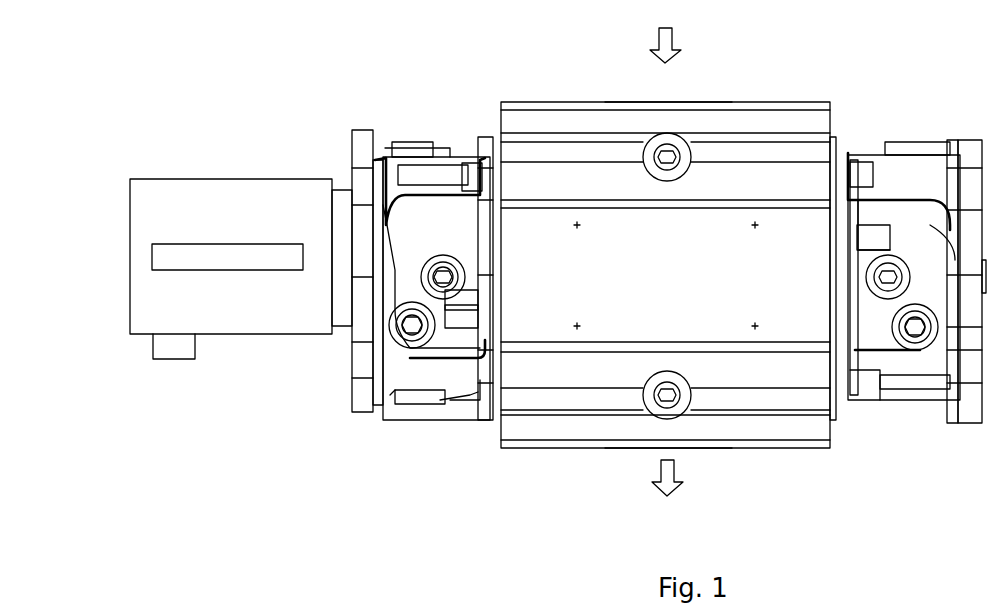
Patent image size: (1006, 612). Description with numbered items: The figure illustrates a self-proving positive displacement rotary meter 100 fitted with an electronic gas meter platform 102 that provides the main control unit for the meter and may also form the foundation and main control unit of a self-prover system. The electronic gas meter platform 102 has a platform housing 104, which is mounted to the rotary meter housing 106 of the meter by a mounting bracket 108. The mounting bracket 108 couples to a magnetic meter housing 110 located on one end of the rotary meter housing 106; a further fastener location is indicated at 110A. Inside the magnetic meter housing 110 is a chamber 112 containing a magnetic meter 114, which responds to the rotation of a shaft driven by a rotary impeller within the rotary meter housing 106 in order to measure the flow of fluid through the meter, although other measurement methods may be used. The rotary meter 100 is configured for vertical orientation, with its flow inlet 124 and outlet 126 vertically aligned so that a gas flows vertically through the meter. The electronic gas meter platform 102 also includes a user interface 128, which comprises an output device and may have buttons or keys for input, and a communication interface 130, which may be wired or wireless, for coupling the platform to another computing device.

The rotary meter 100 is at (308, 50).
The electronic gas meter platform 102 is at (200, 160).
The platform housing 104 is at (301, 311).
The rotary meter housing 106 is at (683, 279).
The mounting bracket 108 is at (346, 330).
The magnetic meter housing 110 is at (438, 246).
The fastener 110A is at (395, 393).
The chamber 112 is at (452, 128).
The magnetic meter 114 is at (338, 150).
The flow inlet 124 is at (650, 101).
The outlet 126 is at (626, 450).
The user interface 128 is at (169, 244).
The communication interface 130 is at (153, 357).